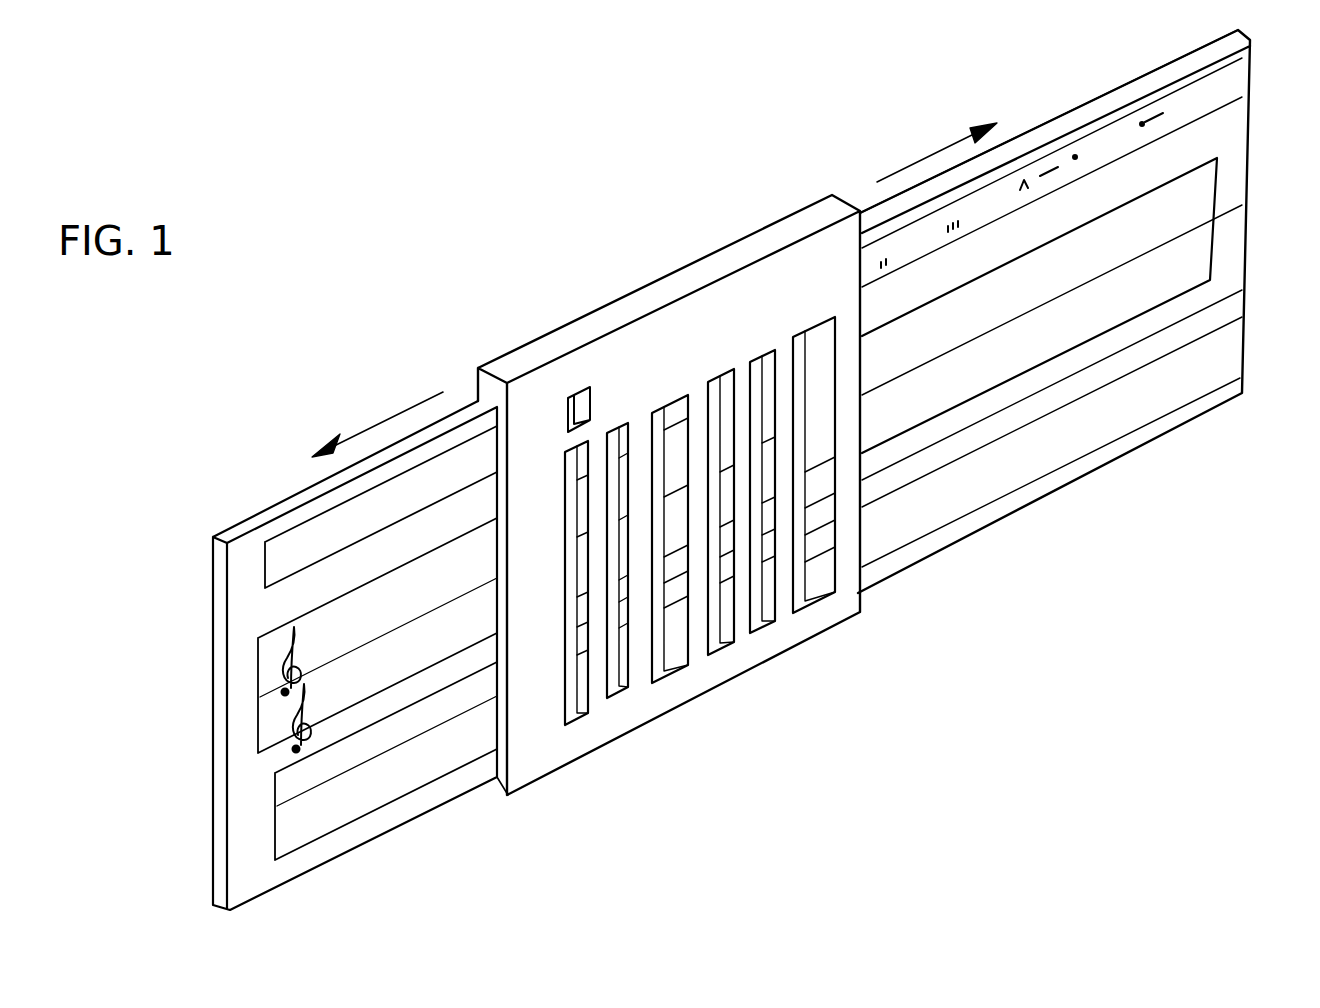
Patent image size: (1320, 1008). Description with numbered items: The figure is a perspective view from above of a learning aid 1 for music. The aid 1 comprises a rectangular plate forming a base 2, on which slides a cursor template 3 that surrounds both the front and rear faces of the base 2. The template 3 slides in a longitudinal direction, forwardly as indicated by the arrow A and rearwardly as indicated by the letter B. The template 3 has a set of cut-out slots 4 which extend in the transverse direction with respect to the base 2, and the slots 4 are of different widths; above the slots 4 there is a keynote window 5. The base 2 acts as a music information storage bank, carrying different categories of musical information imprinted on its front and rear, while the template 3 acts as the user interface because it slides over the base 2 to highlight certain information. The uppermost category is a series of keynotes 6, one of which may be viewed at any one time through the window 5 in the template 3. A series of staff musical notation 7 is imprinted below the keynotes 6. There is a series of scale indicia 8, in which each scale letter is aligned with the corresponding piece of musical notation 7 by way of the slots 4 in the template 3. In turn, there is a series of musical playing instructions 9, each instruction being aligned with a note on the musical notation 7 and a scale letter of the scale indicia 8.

The learning aid 1 is at (838, 168).
The base 2 is at (1252, 207).
The cursor template 3 is at (735, 683).
The cut-out slots 4 is at (580, 723).
The keynote window 5 is at (575, 396).
The keynotes 6 is at (283, 540).
The staff musical notation 7 is at (255, 668).
The scale indicia 8 is at (275, 800).
The musical playing instructions 9 is at (340, 830).